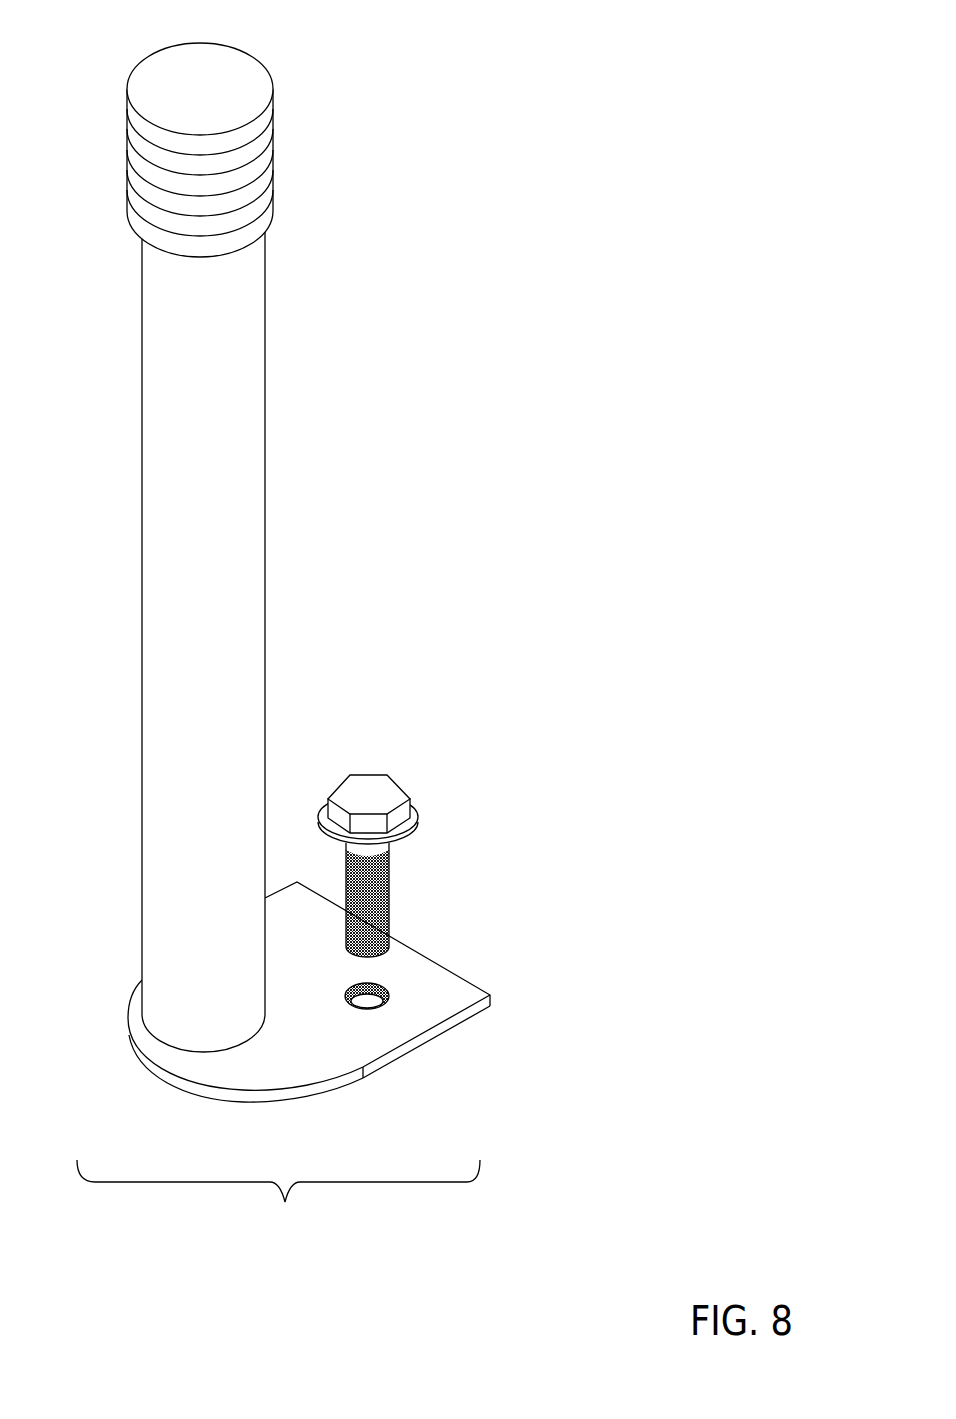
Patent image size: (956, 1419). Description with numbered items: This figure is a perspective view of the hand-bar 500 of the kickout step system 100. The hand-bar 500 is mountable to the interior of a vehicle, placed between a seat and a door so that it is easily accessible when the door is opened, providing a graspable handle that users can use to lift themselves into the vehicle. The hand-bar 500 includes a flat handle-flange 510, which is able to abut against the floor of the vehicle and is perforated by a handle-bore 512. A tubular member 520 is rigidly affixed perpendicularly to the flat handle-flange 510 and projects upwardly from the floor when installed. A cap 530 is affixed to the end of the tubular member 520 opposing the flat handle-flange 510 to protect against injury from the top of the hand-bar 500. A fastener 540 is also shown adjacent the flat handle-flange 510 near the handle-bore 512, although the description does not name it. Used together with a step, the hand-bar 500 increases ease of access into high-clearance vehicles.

The kickout step system 100 is at (627, 104).
The hand-bar 500 is at (278, 1201).
The flat handle-flange 510 is at (448, 963).
The handle-bore 512 is at (371, 1003).
The tubular member 520 is at (265, 450).
The cap 530 is at (233, 88).
The bolt 540 is at (375, 770).